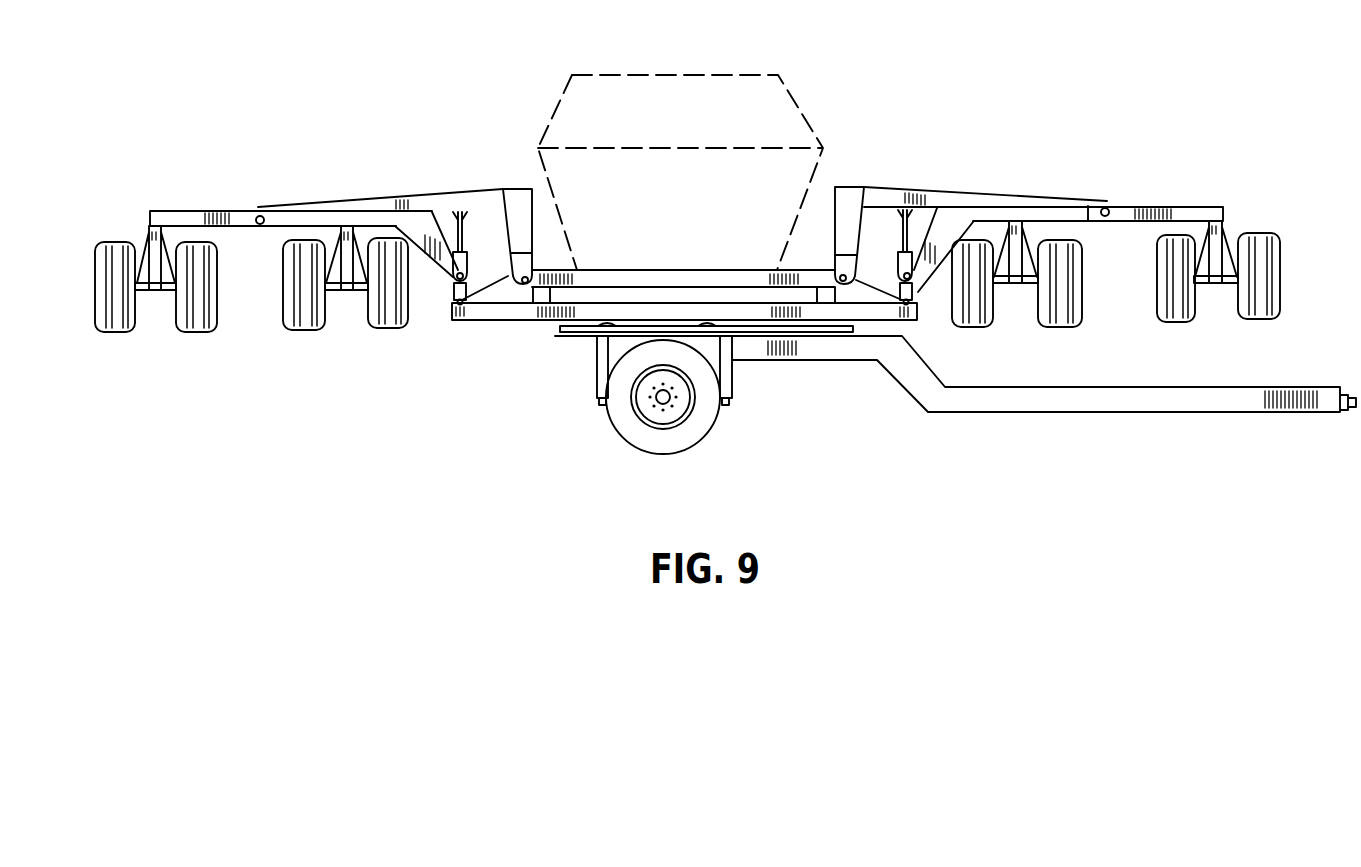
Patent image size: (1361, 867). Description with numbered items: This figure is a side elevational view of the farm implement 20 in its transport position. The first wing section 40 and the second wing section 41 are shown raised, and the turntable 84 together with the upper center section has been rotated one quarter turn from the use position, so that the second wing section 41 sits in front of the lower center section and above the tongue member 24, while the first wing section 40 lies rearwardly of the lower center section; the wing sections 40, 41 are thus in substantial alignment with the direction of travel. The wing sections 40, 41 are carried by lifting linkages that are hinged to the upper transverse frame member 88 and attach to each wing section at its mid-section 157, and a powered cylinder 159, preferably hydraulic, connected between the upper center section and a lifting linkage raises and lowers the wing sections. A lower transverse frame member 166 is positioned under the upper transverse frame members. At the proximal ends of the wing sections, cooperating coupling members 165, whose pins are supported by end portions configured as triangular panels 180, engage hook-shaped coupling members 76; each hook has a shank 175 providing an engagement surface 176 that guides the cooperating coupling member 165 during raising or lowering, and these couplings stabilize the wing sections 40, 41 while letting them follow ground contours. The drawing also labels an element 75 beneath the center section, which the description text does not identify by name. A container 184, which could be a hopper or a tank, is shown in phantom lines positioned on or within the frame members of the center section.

The farm implement 20 is at (888, 146).
The tongue member 24 is at (1261, 405).
The first wing section 40 is at (214, 219).
The second wing section 41 is at (1133, 212).
The center wheel 75 is at (593, 399).
The coupling member 76 is at (593, 411).
The turntable 84 is at (551, 326).
The transverse frame member 88 is at (809, 270).
The mid-section of the wing section 157 is at (1093, 214).
The powered cylinder 159 is at (915, 284).
The cooperating coupling member 165 is at (463, 278).
The lower transverse frame member 166 is at (489, 313).
The shank 175 is at (598, 366).
The engagement surface 176 is at (600, 380).
The triangular panel 180 is at (945, 230).
The container 184 is at (757, 72).